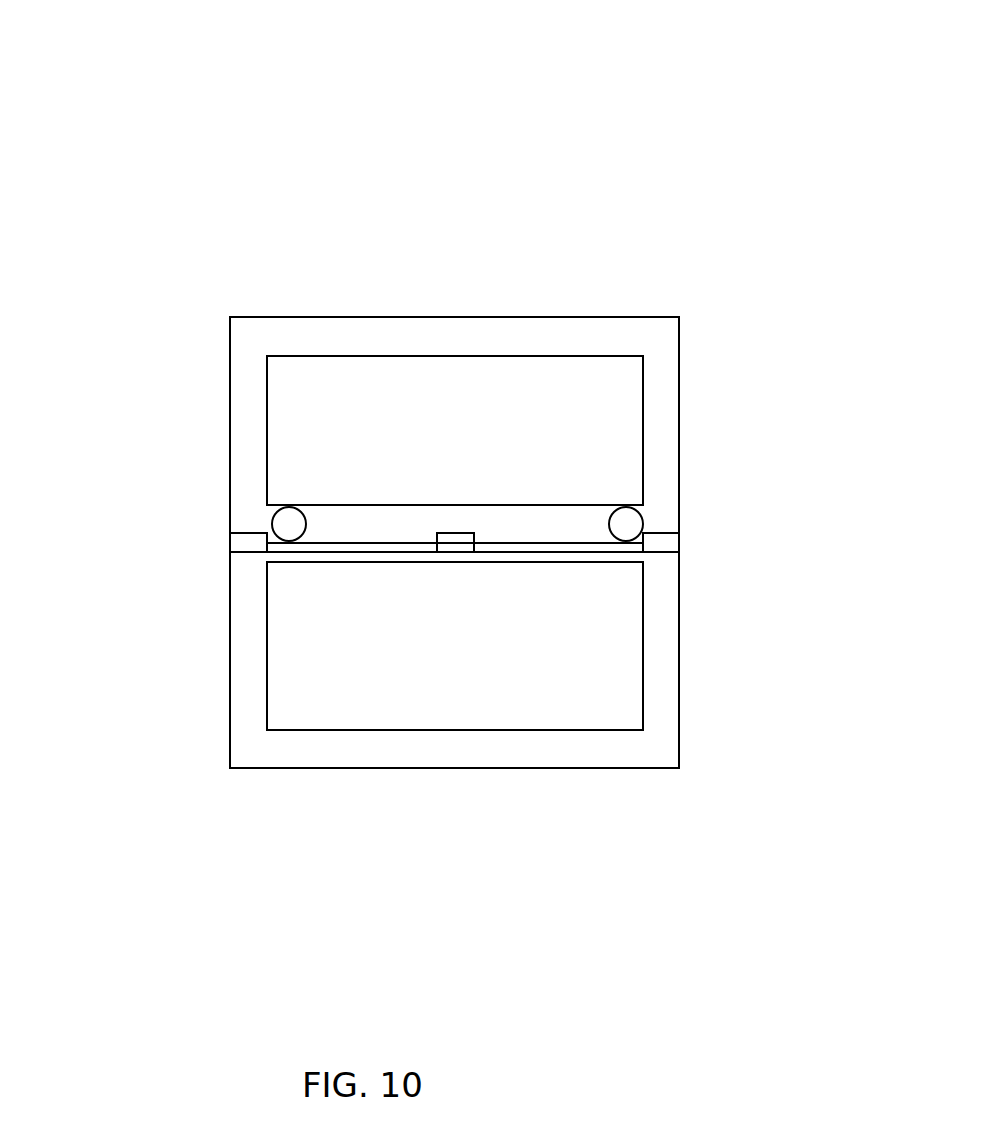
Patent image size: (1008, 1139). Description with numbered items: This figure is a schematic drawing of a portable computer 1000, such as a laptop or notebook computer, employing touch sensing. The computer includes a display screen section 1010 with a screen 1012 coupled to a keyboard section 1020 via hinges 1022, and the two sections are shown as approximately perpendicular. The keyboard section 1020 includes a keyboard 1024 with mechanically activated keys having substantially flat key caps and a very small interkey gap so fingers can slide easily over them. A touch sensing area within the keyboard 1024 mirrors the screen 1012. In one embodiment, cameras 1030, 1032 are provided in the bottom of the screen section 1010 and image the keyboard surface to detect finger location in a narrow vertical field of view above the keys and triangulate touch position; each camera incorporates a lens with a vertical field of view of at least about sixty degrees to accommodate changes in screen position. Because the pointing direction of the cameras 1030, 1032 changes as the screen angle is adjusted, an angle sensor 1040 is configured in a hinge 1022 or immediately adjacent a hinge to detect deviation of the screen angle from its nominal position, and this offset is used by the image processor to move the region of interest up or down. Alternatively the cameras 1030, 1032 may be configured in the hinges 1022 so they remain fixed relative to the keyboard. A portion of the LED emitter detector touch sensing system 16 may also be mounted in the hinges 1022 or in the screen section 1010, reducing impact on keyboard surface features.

The foldable electronic device 1000 is at (450, 252).
The display screen section 1010 is at (643, 305).
The screen 1012 is at (655, 396).
The keyboard section 1020 is at (684, 780).
The keyboard 1024 is at (652, 663).
The camera 1030 is at (655, 512).
The camera 1032 is at (266, 506).
The hinge 1022 is at (693, 540).
The angle sensor 1040 is at (252, 552).
The LED emitter detector touch sensing system 16 is at (457, 565).